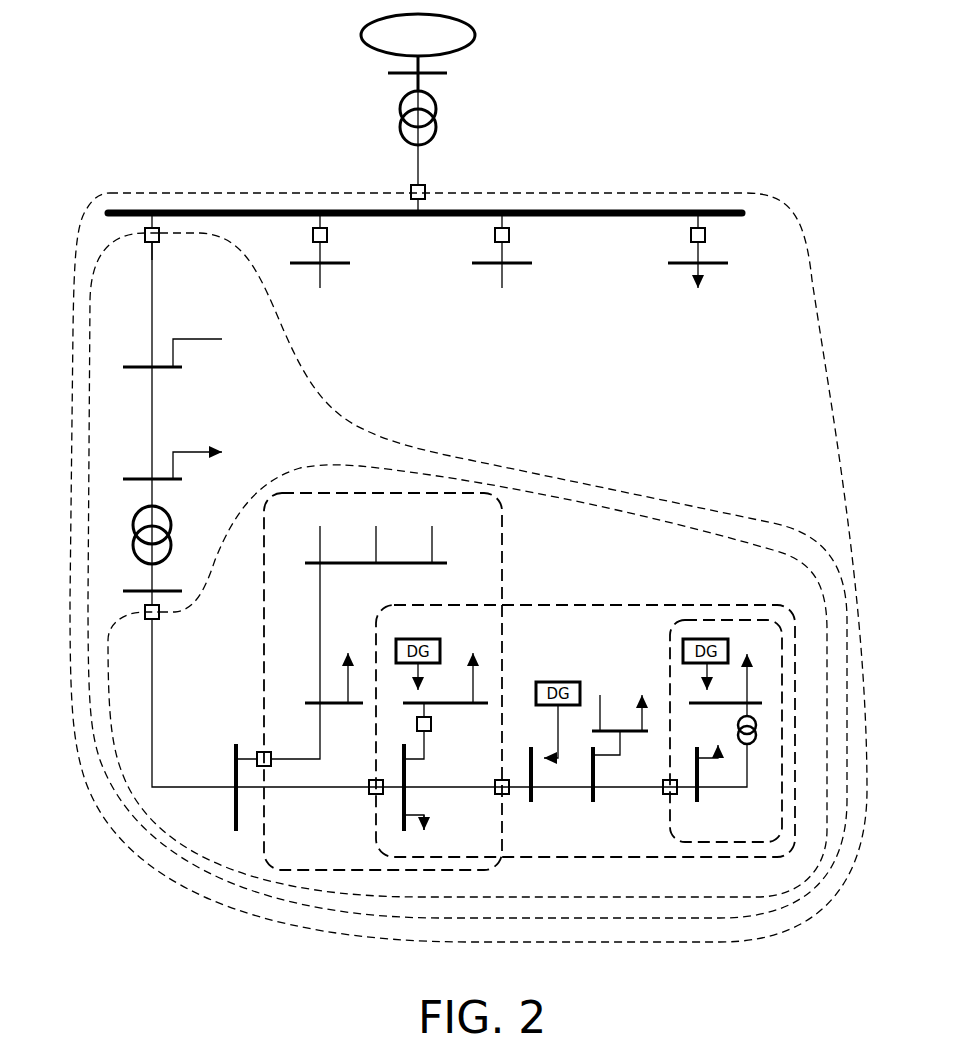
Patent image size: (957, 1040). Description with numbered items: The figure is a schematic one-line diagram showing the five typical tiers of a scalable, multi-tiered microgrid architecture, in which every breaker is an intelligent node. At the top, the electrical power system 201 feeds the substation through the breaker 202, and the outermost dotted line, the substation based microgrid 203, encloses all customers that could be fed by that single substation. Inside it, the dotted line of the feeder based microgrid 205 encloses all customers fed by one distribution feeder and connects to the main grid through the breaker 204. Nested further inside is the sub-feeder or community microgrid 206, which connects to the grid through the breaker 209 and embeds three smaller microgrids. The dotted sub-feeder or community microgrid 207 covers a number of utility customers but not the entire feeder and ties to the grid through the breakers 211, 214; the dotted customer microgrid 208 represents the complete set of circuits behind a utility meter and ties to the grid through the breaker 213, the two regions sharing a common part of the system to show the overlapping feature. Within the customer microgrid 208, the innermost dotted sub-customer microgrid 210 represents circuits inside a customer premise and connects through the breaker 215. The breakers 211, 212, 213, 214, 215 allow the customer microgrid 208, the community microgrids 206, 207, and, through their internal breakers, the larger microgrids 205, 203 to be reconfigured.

The electrical power system 201 is at (474, 28).
The breaker 202 is at (426, 188).
The substation based microgrid 203 is at (622, 192).
The breaker 204 is at (160, 240).
The feeder based microgrid 205 is at (309, 366).
The sub-feeder or community microgrid 206 is at (343, 465).
The sub-feeder or community microgrid 207 is at (502, 548).
The customer microgrid 208 is at (598, 605).
The breaker 209 is at (160, 617).
The sub-customer microgrid 210 is at (670, 682).
The breaker 211 is at (256, 752).
The breaker 212 is at (431, 730).
The breaker 213 is at (369, 794).
The breaker 214 is at (509, 793).
The breaker 215 is at (677, 793).